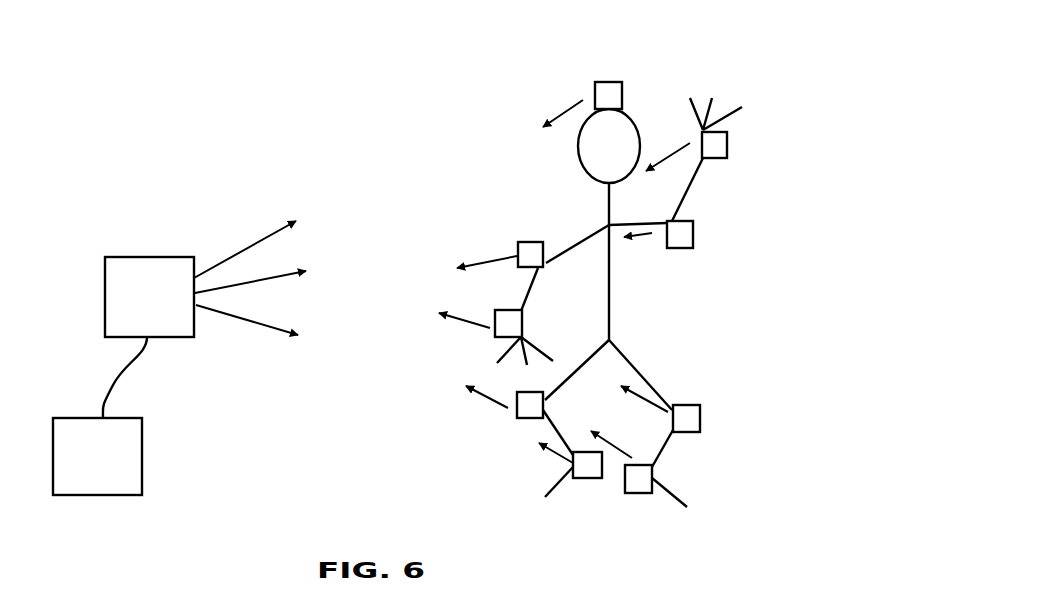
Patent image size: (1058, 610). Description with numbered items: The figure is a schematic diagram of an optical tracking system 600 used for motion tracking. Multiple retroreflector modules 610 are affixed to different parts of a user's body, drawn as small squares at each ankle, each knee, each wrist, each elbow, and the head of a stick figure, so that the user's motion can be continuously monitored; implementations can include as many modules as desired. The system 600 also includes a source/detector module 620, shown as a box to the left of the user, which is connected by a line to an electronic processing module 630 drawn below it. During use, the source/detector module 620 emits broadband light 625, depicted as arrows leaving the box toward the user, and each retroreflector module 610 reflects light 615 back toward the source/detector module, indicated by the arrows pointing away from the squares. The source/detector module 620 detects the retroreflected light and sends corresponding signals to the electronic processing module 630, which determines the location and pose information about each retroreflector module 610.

The optical tracking system 600 is at (124, 221).
The retroreflector module 610 is at (615, 82).
The reflected light 615 is at (573, 105).
The source/detector module 620 is at (149, 297).
The broadband light 625 is at (250, 273).
The electronic processing module 630 is at (100, 416).